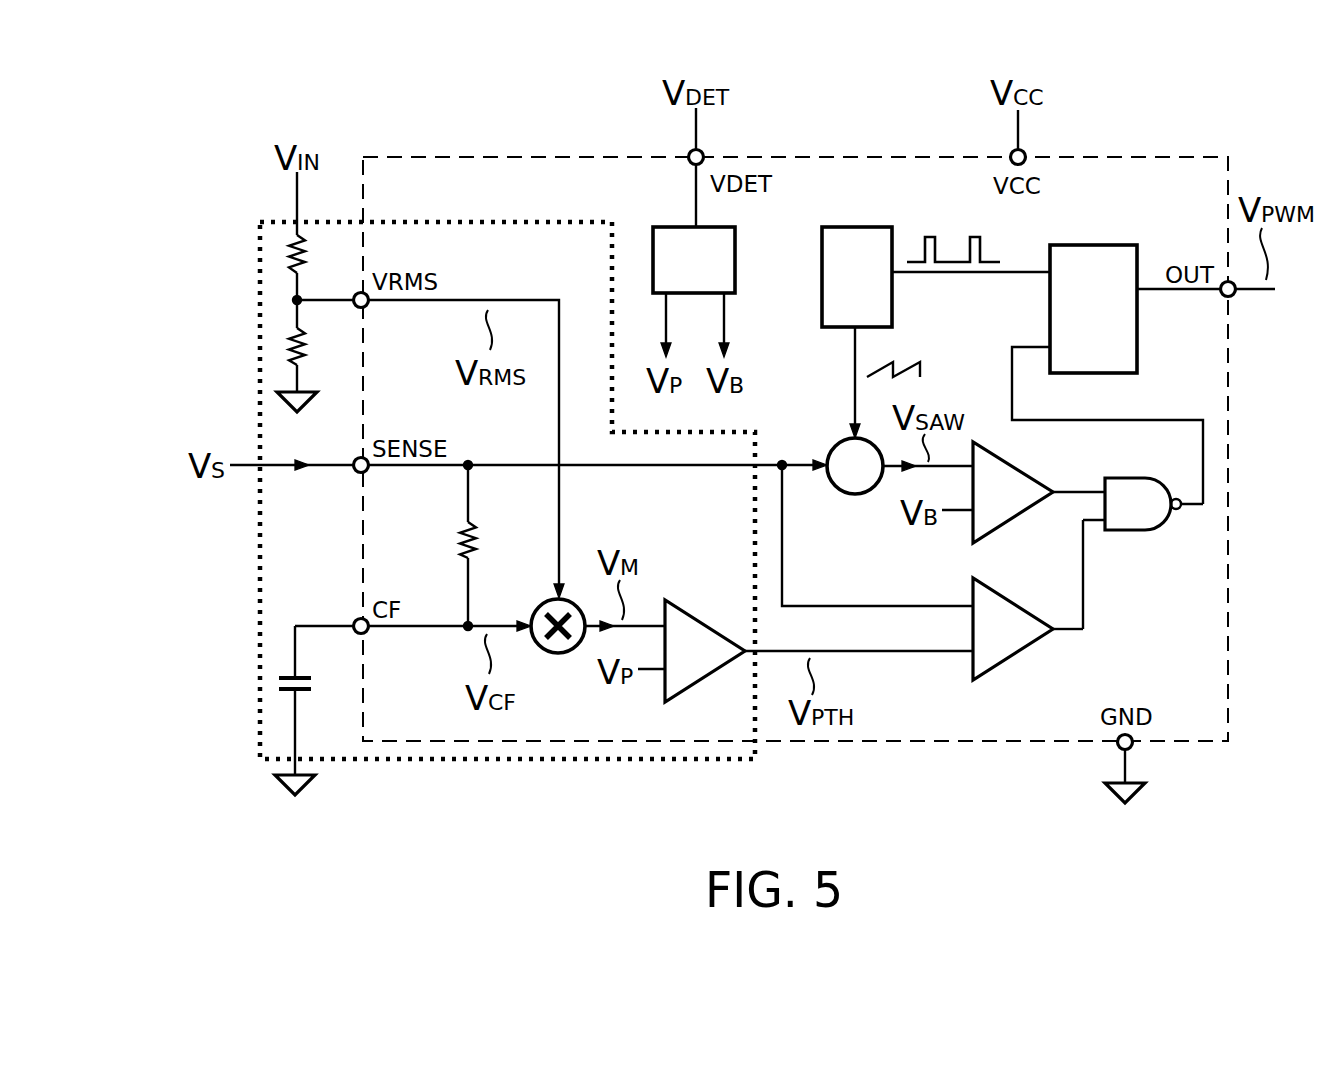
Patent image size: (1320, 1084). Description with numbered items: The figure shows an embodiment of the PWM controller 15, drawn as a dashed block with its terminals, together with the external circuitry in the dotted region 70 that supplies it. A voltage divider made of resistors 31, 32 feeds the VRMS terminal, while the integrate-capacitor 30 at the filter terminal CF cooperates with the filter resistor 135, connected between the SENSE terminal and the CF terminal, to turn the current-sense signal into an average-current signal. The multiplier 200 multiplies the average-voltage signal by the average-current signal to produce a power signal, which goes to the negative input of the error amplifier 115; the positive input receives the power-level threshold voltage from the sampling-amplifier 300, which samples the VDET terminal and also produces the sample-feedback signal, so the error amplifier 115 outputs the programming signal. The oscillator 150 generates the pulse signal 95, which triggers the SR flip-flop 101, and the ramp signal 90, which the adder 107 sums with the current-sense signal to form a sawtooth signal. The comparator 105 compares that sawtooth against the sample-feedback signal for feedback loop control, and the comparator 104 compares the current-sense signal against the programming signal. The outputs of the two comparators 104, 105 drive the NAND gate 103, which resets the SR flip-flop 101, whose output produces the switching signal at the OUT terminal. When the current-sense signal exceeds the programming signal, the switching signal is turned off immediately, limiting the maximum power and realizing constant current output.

The PWM controller 15 is at (1190, 157).
The RMS detection circuit 70 is at (451, 222).
The resistor 31 is at (280, 248).
The resistor 32 is at (280, 350).
The integrate-capacitor 30 is at (278, 688).
The filter resistor 135 is at (456, 545).
The multiplier 200 is at (557, 658).
The error amplifier 115 is at (702, 613).
The sampling-amplifier 300 is at (647, 225).
The oscillator 150 is at (858, 227).
The pulse signal PLS 95 is at (950, 236).
The ramp signal RMP 90 is at (918, 360).
The adder 107 is at (833, 448).
The comparator 105 is at (1022, 520).
The NAND gate 103 is at (1134, 540).
The comparator 104 is at (1020, 656).
The SR flip-flop 101 is at (1105, 243).